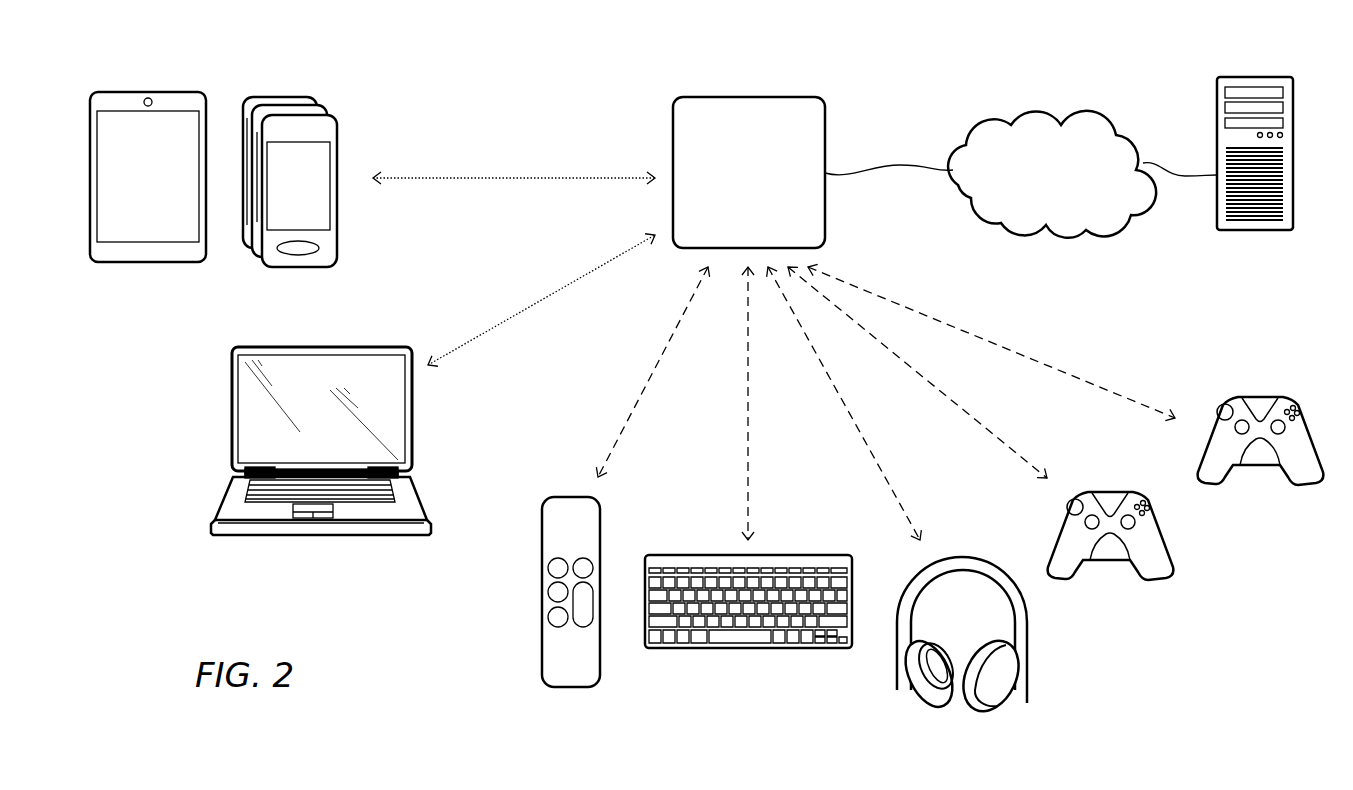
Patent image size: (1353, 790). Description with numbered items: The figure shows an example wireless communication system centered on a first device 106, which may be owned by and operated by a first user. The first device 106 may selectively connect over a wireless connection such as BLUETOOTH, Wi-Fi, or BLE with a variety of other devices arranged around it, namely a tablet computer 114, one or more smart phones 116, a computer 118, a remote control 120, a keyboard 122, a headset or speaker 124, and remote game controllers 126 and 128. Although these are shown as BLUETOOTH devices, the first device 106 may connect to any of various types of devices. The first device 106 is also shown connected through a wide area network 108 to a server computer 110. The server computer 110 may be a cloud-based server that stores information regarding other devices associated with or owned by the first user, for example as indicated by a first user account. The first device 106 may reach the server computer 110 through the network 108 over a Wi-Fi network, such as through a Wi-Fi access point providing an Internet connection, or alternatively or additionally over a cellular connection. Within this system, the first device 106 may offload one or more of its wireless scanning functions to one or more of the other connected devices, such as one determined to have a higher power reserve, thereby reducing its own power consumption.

The first device 106 is at (747, 96).
The wide area network 108 is at (1080, 117).
The server computer 110 is at (1255, 76).
The tablet computer 114 is at (148, 263).
The smart phones 116 is at (300, 268).
The computer 118 is at (318, 537).
The remote control 120 is at (573, 688).
The keyboard 122 is at (745, 649).
The headset or speaker 124 is at (960, 557).
The remote game controller 126 is at (1108, 562).
The remote game controller 128 is at (1258, 467).